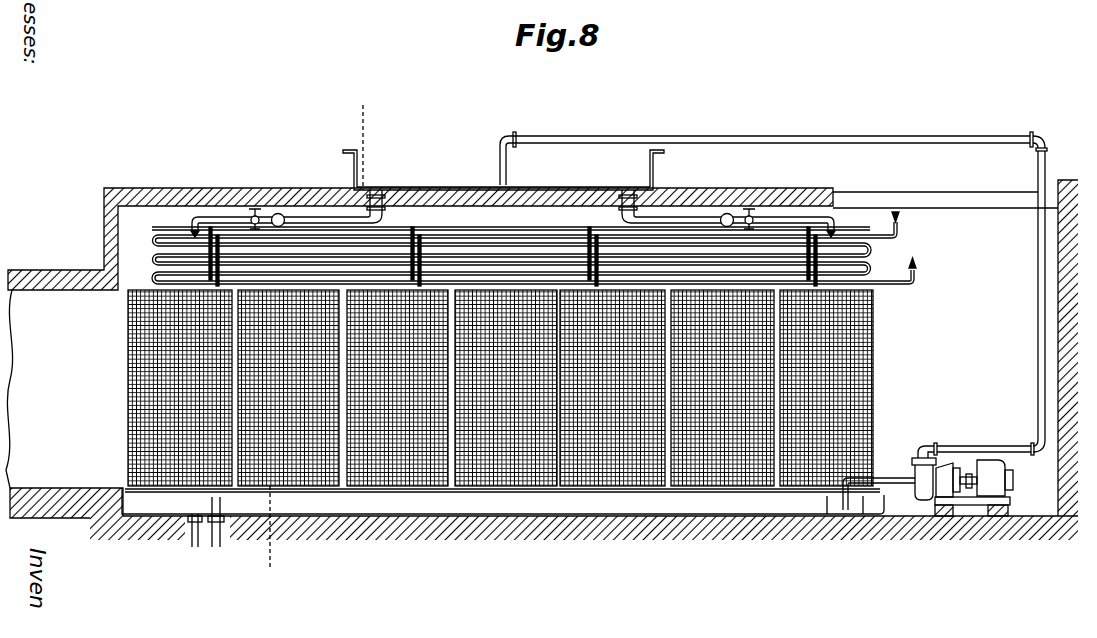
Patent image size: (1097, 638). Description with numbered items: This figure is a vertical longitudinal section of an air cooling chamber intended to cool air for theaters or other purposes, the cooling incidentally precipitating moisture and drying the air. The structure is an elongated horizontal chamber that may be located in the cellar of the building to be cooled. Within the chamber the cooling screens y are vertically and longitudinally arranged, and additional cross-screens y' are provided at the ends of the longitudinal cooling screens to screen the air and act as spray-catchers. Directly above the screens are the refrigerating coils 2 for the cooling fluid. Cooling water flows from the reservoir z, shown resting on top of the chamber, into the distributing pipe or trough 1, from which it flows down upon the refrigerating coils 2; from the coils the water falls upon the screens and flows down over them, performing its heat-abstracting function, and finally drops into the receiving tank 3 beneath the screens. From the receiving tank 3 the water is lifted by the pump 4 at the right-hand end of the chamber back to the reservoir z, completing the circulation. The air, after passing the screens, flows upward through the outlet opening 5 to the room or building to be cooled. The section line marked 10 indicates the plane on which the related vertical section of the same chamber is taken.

The section line 10 is at (359, 108).
The reservoir z is at (423, 155).
The distributing pipe or trough 1 is at (523, 249).
The refrigerating coils 2 is at (153, 257).
The receiving tank 3 is at (503, 517).
The pump 4 is at (915, 496).
The outlet opening 5 is at (961, 193).
The cooling screens y is at (497, 388).
The cross-screens y' is at (497, 388).